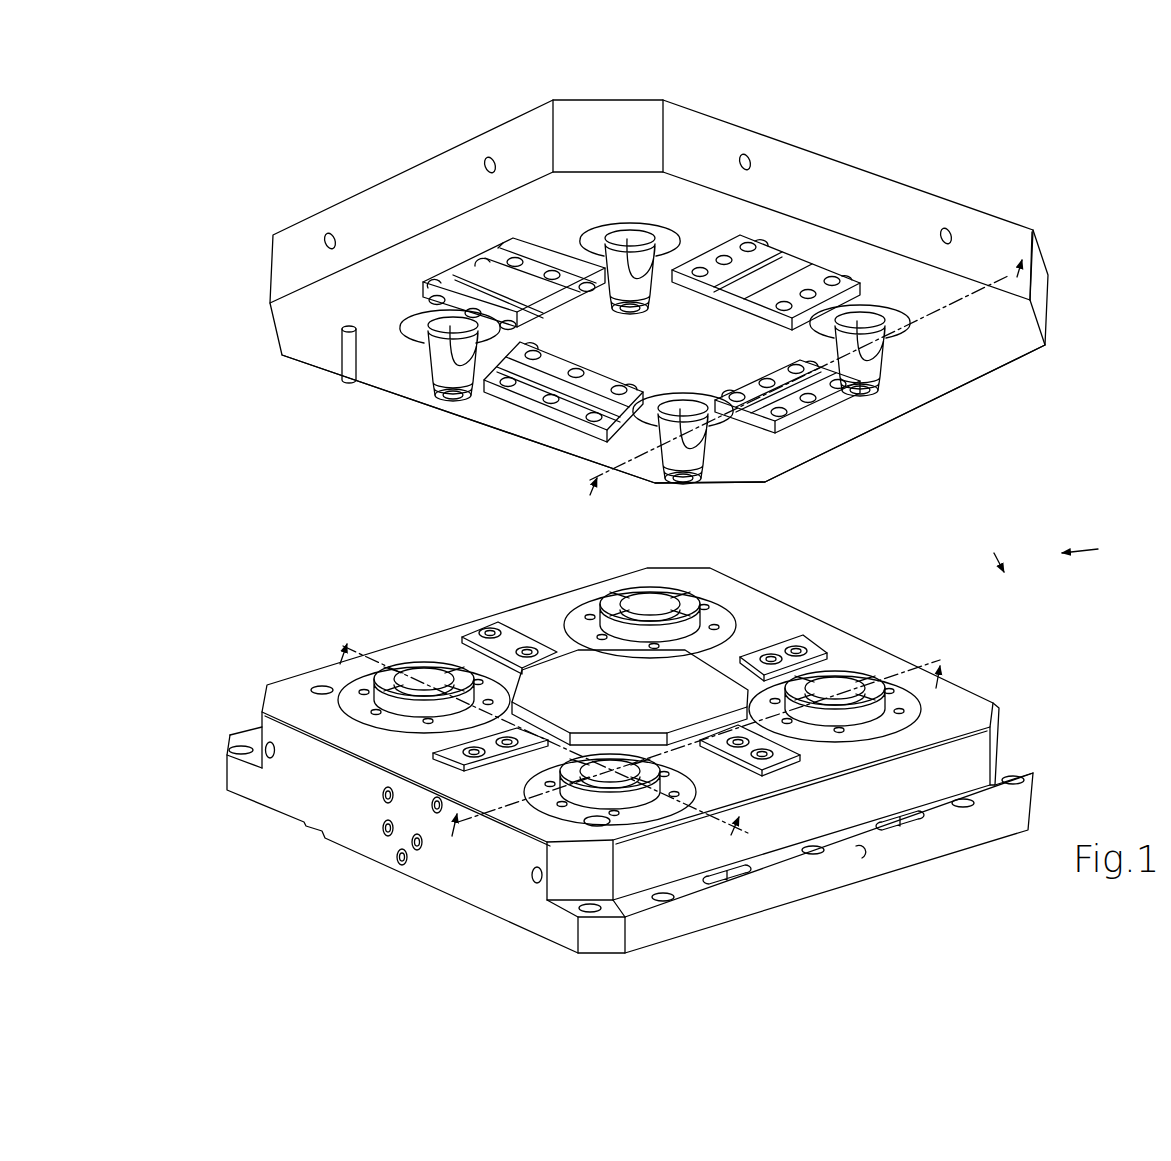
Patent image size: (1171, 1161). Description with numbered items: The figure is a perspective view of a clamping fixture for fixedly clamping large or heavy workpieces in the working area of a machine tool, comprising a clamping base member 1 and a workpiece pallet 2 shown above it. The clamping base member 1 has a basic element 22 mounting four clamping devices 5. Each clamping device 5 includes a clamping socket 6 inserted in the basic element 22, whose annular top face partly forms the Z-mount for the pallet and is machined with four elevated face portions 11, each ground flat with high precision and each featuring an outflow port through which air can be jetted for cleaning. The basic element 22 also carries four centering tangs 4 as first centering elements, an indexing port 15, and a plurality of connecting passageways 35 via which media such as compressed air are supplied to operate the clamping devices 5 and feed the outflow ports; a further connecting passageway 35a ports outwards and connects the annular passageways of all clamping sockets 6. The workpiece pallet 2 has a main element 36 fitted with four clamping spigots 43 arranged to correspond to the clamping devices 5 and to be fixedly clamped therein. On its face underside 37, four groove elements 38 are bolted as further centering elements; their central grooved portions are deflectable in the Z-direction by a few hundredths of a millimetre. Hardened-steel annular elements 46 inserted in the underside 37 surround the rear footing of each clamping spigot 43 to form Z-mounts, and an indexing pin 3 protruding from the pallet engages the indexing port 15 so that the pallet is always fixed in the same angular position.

The clamping base member 1 is at (890, 630).
The workpiece pallet 2 is at (972, 425).
The indexing pin 3 is at (342, 380).
The centering tang 4 is at (468, 623).
The clamping device 5 is at (394, 662).
The clamping socket 6 is at (387, 700).
The elevated face portion 11 is at (453, 663).
The indexing port 15 is at (318, 690).
The basic element 22 is at (782, 615).
The connecting passageway 35 is at (365, 817).
The connecting passageway 35a is at (423, 845).
The main element 36 is at (1008, 346).
The underside 37 is at (785, 456).
The groove element 38 is at (458, 250).
The clamping spigot 43 is at (642, 283).
The annular element 46 is at (598, 236).